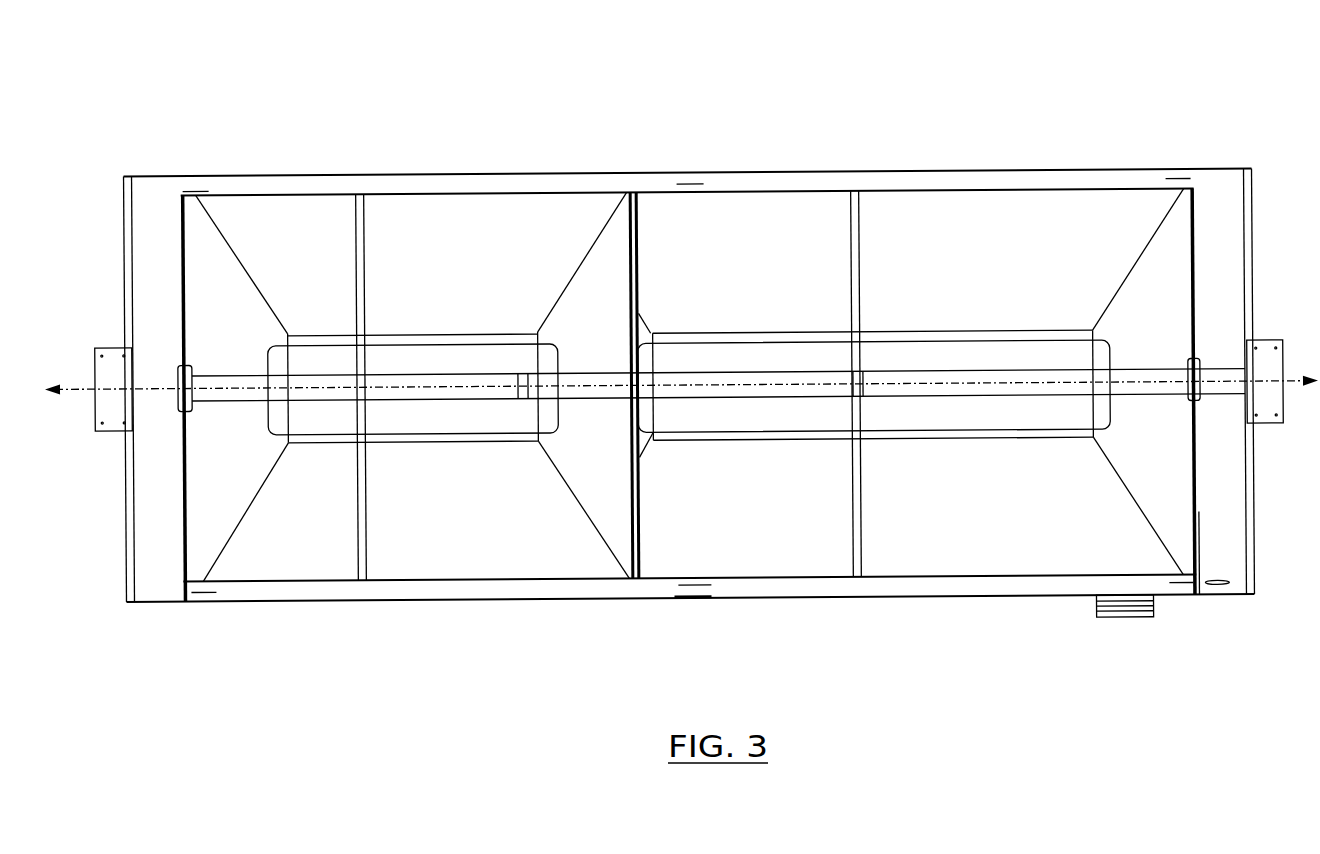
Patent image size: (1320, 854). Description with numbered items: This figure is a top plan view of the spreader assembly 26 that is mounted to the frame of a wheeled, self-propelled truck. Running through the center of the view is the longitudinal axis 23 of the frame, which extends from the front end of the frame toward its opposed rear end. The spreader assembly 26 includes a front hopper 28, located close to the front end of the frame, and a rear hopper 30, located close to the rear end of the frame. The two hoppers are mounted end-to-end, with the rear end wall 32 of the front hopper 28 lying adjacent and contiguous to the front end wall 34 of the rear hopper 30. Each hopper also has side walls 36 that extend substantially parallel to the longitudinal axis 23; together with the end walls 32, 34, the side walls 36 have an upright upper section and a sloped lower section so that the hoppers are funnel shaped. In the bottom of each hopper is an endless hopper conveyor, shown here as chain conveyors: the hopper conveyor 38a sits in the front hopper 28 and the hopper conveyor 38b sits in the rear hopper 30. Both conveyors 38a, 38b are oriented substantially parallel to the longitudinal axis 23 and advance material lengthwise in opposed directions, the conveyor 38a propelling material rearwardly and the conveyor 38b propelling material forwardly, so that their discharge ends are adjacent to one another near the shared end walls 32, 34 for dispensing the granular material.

The longitudinal axis 23 is at (1302, 384).
The spreader assembly 26 is at (437, 154).
The front hopper 28 is at (277, 227).
The rear hopper 30 is at (833, 226).
The rear end wall 32 is at (588, 456).
The front end wall 34 is at (648, 428).
The side walls 36 is at (773, 488).
The hopper conveyor 38a is at (432, 432).
The hopper conveyor 38b is at (897, 436).